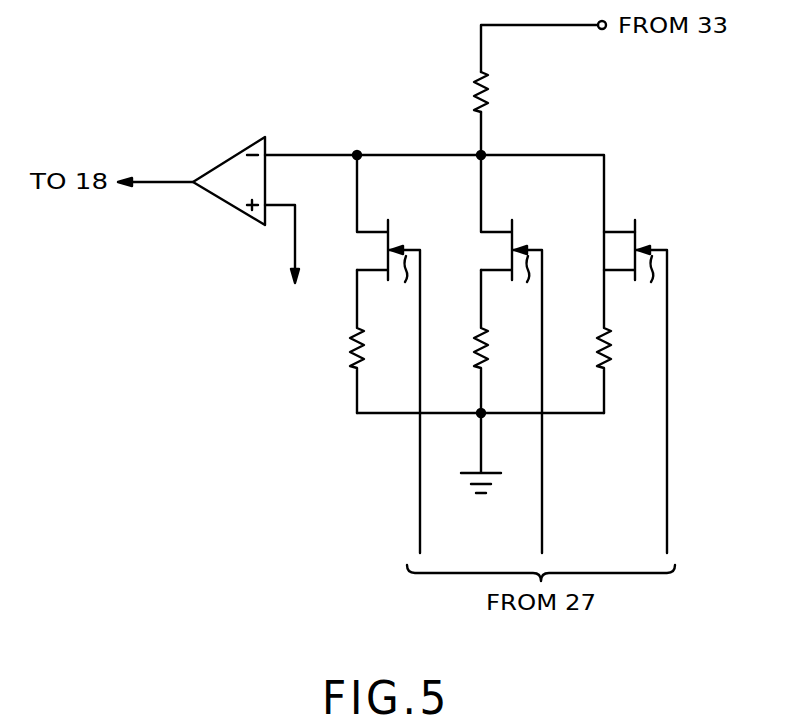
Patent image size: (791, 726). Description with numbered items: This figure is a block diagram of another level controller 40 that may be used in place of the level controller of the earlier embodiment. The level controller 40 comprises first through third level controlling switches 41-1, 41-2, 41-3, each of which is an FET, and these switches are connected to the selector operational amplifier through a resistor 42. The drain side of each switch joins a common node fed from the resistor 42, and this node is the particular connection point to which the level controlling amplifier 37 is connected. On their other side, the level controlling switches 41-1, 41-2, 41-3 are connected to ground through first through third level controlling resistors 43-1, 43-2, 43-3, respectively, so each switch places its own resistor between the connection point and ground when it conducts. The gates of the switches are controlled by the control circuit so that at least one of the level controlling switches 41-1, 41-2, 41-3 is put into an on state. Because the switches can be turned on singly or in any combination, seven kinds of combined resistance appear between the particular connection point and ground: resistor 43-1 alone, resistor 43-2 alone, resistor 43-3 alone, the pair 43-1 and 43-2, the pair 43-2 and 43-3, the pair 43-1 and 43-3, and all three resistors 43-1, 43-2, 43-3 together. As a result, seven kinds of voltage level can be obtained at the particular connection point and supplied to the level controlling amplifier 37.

The level controlling amplifier 37 is at (228, 157).
The level controller 40 is at (645, 145).
The first level controlling switch 41-1 is at (602, 254).
The second level controlling switch 41-2 is at (480, 254).
The third level controlling switch 41-3 is at (356, 254).
The resistor 42 is at (487, 86).
The first level controlling resistor 43-1 is at (604, 331).
The second level controlling resistor 43-2 is at (480, 331).
The third level controlling resistor 43-3 is at (356, 331).